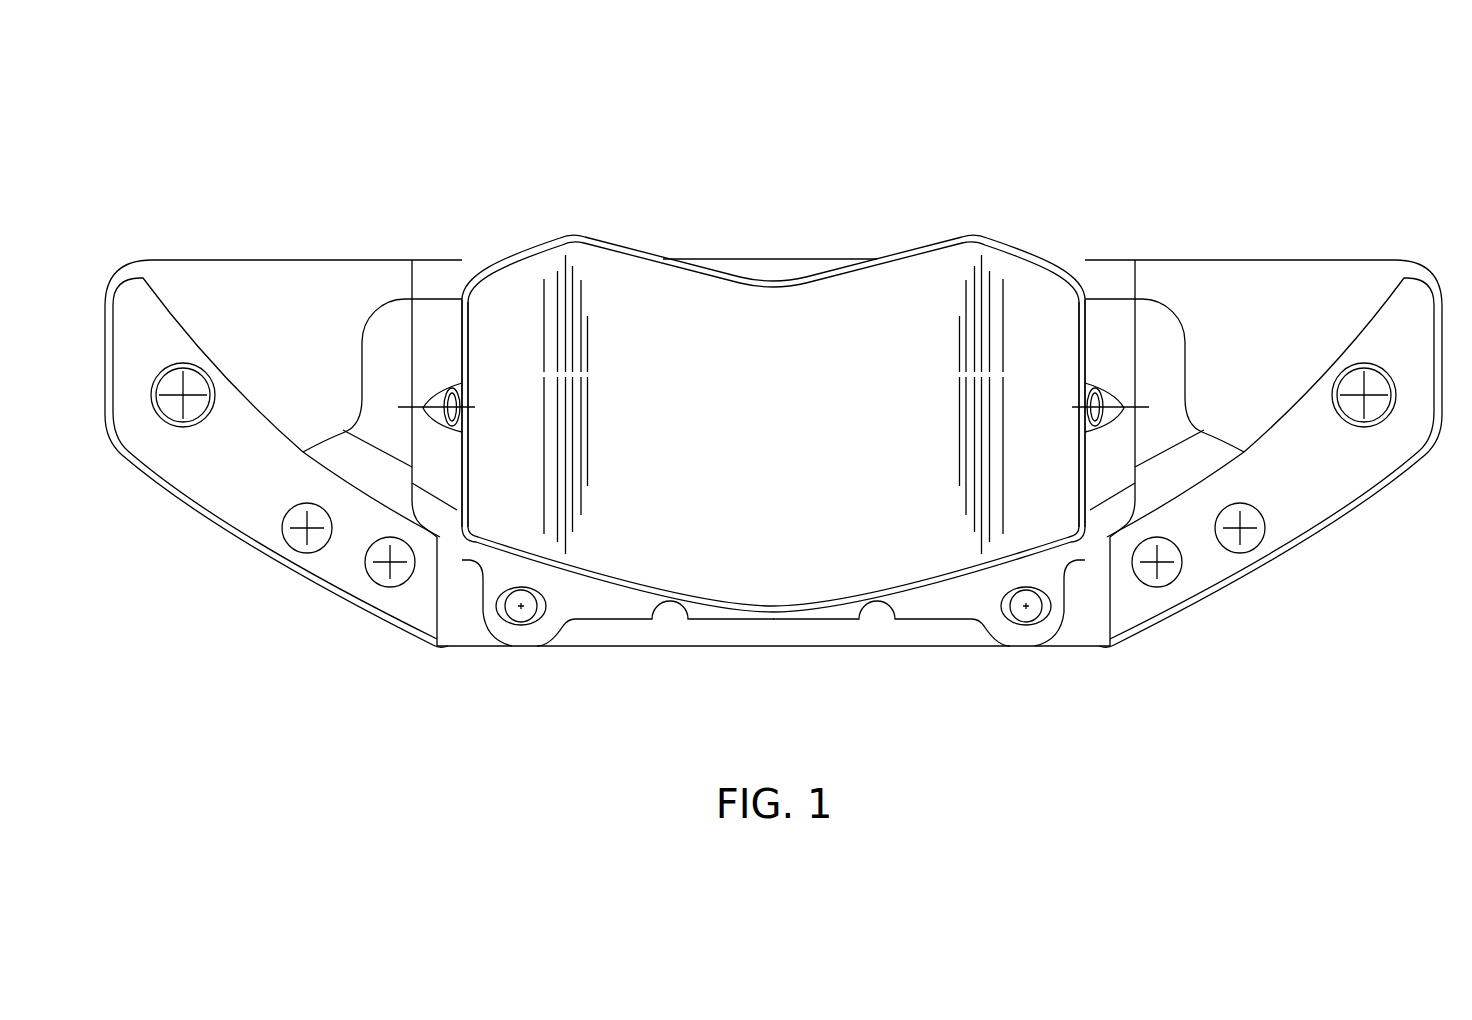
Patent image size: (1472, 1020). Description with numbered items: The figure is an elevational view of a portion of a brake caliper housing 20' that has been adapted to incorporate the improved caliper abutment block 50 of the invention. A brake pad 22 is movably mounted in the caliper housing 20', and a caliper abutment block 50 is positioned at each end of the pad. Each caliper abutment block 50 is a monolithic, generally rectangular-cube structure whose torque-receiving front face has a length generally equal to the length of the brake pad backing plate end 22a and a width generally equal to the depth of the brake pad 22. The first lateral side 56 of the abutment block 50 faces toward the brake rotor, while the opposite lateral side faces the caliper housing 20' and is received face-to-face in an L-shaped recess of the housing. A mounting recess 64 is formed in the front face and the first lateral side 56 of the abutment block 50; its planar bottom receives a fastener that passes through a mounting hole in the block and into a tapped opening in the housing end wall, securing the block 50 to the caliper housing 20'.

The caliper housing 20' is at (773, 382).
The brake pad 22 is at (790, 318).
The brake pad backing plate end 22a is at (470, 315).
The caliper abutment block 50 is at (388, 439).
The first lateral side 56 is at (438, 310).
The mounting recess 64 is at (432, 438).